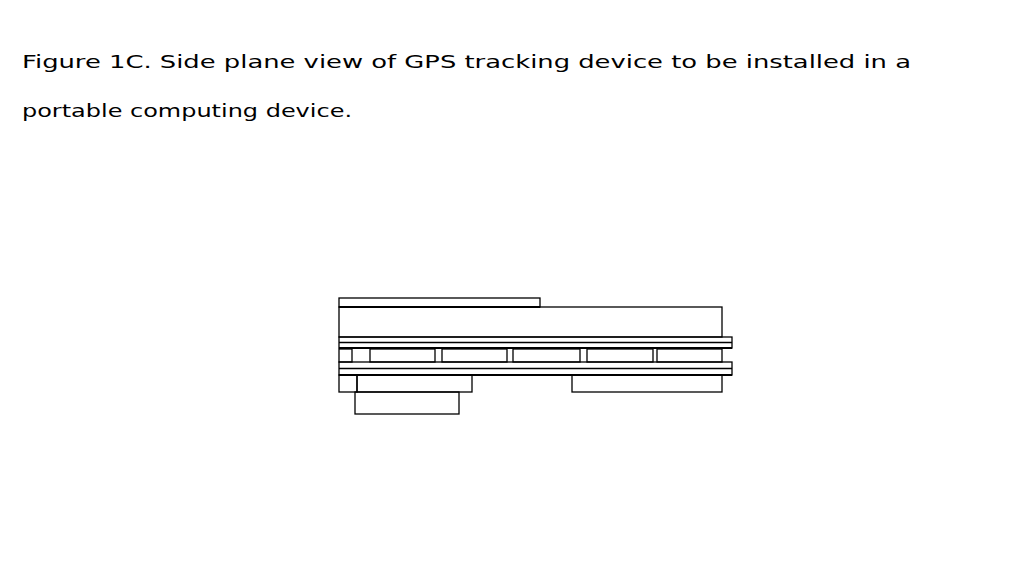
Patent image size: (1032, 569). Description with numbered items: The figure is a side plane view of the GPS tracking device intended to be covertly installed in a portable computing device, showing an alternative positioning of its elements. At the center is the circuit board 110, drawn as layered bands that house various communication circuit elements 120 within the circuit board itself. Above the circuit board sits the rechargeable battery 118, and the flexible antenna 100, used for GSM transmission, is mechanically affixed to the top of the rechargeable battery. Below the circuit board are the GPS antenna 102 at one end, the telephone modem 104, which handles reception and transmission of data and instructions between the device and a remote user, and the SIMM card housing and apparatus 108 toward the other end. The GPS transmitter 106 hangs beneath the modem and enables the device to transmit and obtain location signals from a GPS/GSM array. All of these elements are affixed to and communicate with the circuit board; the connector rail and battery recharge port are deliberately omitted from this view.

The flexible antenna 100 is at (503, 287).
The rechargeable battery 118 is at (337, 315).
The circuit board 110 is at (337, 368).
The communication circuit elements 120 is at (630, 368).
The GPS antenna 102 is at (337, 386).
The telephone modem 104 is at (467, 393).
The SIMM card housing and apparatus 108 is at (667, 393).
The GPS transmitter 106 is at (379, 415).